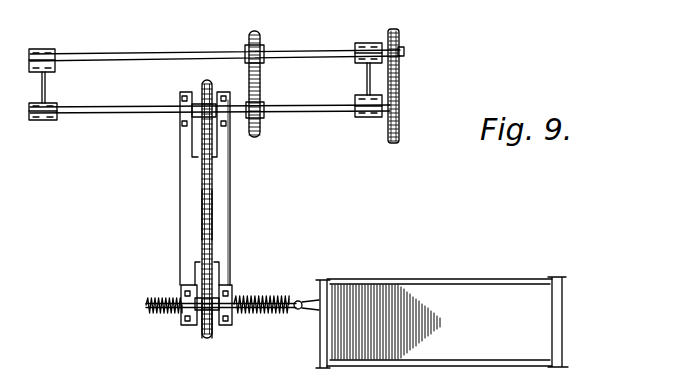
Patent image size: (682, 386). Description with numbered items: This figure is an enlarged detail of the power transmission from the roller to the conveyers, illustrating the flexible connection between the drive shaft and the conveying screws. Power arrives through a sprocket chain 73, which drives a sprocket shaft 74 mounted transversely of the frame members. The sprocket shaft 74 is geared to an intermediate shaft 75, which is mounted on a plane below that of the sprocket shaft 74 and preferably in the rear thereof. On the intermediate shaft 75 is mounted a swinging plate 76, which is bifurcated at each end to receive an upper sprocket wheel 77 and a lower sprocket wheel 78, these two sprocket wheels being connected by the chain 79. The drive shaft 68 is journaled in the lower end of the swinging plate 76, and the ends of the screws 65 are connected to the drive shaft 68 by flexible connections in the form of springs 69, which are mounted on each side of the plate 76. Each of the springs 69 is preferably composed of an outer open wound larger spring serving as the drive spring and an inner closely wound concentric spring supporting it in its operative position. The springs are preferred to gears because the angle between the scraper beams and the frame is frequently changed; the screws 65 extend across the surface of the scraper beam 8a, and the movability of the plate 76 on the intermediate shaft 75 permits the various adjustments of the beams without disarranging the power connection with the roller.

The intermediate shaft 75 is at (153, 53).
The sprocket shaft 74 is at (396, 32).
The sprocket chain 73 is at (390, 125).
The upper sprocket wheel 77 is at (201, 80).
The chain 79 is at (202, 213).
The swinging plate 76 is at (228, 222).
The lower sprocket wheel 78 is at (216, 316).
The drive shaft 68 is at (203, 310).
The springs 69 is at (153, 317).
The screws 65 is at (313, 300).
The scraper beam 8a is at (442, 322).